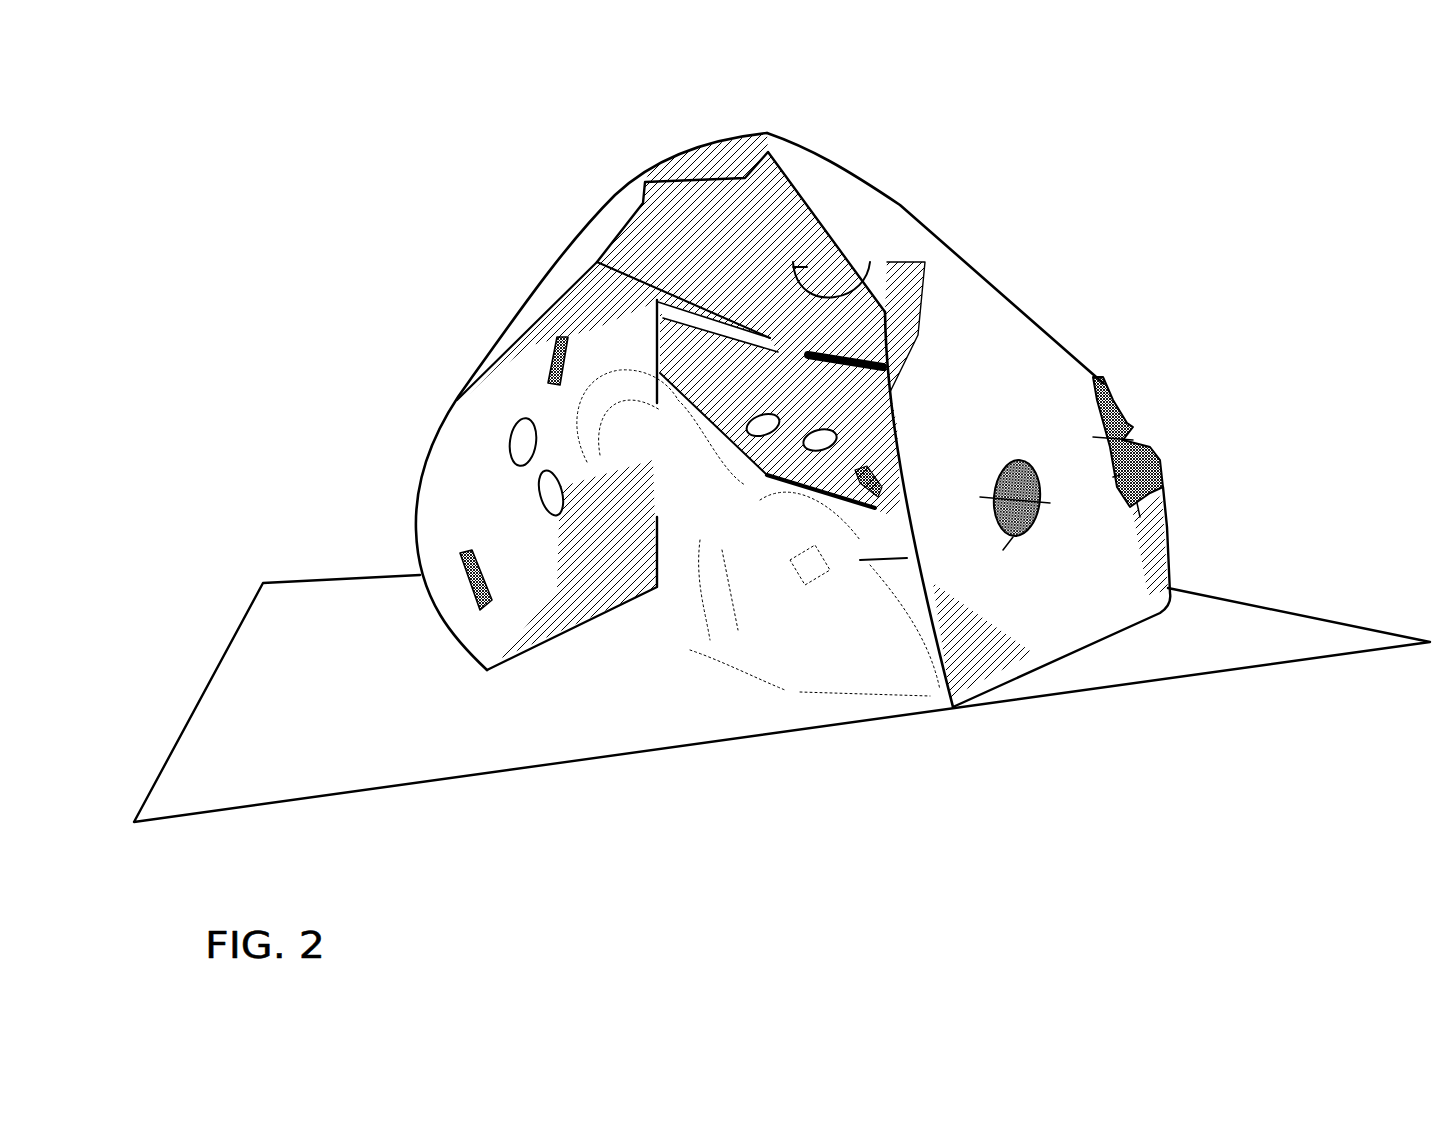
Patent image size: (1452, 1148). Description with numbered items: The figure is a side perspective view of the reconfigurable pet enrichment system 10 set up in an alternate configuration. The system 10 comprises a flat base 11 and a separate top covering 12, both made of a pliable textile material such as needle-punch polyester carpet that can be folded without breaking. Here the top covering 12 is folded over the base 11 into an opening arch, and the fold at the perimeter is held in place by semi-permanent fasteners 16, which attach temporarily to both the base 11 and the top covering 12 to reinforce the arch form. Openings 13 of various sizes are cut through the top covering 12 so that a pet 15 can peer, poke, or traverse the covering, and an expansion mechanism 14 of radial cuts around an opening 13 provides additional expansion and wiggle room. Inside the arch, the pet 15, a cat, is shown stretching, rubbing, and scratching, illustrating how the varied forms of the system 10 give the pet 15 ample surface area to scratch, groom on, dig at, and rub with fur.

The reconfigurable pet enrichment system 10 is at (726, 448).
The base 11 is at (273, 702).
The top covering 12 is at (447, 490).
The openings 13 is at (815, 431).
The expansion mechanism 14 is at (1023, 457).
The pet 15 is at (767, 627).
The semi-permanent fasteners 16 is at (552, 350).